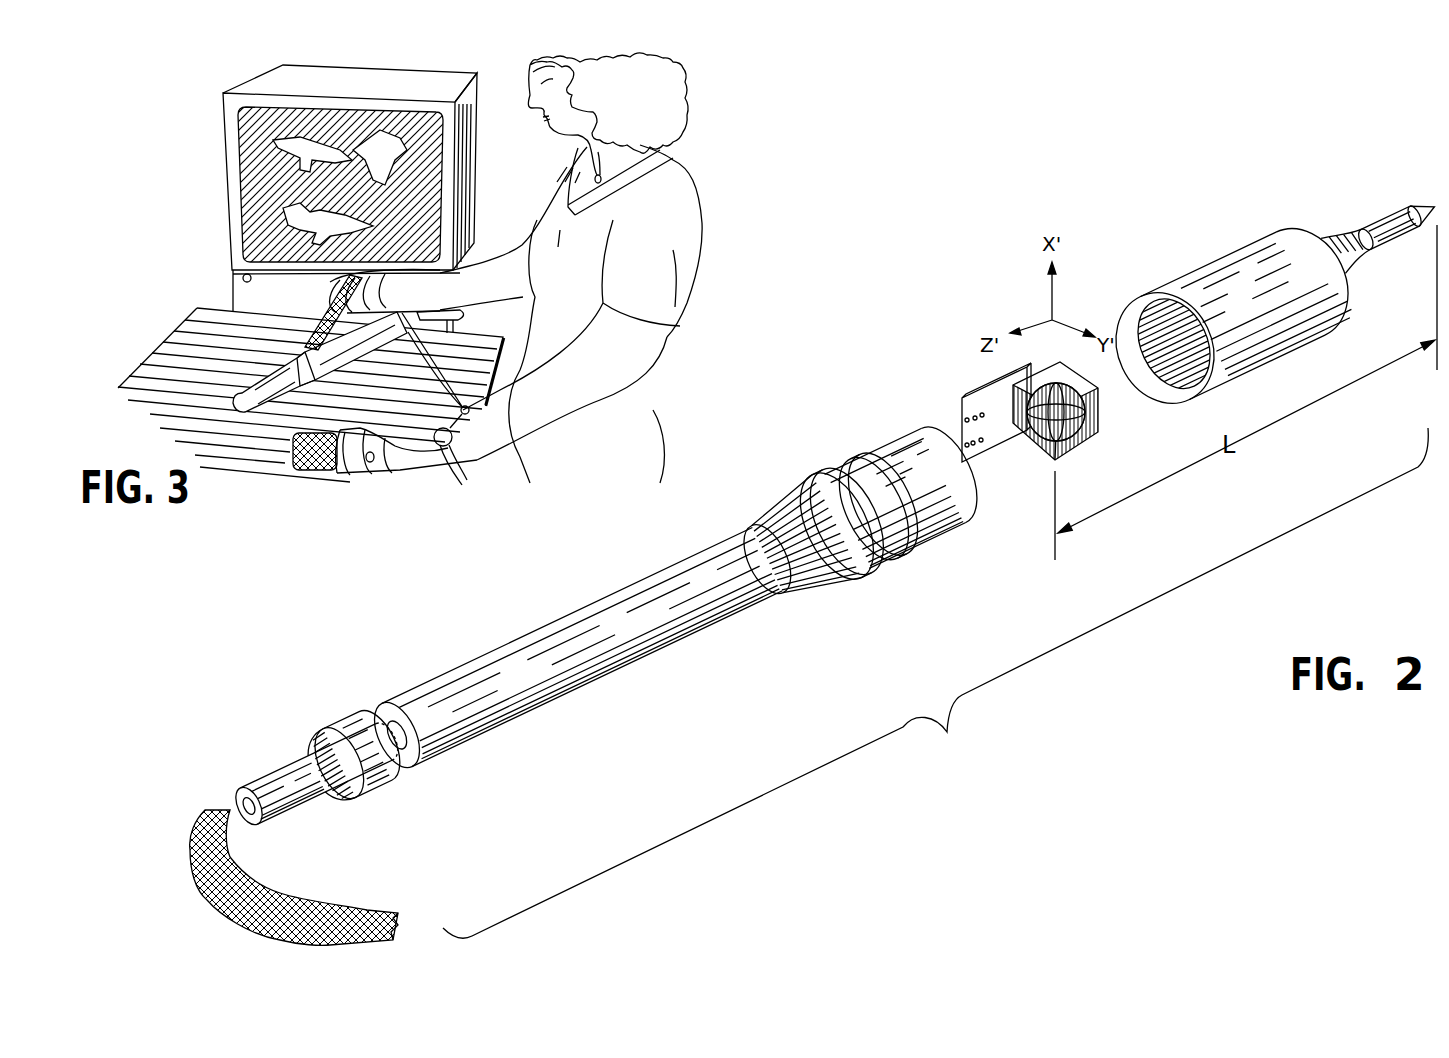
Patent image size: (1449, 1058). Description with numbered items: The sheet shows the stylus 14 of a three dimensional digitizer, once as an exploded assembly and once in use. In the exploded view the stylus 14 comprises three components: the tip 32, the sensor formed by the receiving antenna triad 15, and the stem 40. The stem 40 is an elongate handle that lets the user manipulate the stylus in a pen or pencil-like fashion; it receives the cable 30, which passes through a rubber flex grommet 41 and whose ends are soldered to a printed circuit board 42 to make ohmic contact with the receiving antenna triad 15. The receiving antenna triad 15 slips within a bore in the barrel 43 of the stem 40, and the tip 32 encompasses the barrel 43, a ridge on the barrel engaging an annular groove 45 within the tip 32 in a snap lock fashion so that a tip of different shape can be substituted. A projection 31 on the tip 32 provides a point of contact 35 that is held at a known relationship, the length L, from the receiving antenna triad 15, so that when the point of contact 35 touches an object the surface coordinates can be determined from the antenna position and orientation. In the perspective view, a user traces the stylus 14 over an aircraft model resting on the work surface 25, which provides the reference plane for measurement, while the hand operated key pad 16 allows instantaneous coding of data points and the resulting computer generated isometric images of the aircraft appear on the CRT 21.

In FIG. 3, the stylus 14 is at (320, 315).
In FIG. 2, the stylus 14 is at (935, 683).
In FIG. 2, the receiving antenna triad 15 is at (1097, 430).
In FIG. 3, the hand operated key pad 16 is at (287, 465).
In FIG. 3, the CRT 21 is at (228, 170).
In FIG. 3, the work surface 25 is at (186, 394).
In FIG. 2, the cable 30 is at (315, 920).
In FIG. 2, the projection 31 is at (1343, 237).
In FIG. 2, the tip 32 is at (1254, 303).
In FIG. 2, the point of contact 35 is at (1437, 212).
In FIG. 2, the stem 40 is at (596, 655).
In FIG. 2, the rubber flex grommet 41 is at (290, 763).
In FIG. 2, the printed circuit board 42 is at (988, 398).
In FIG. 2, the barrel 43 is at (917, 517).
In FIG. 2, the annular groove 45 is at (1147, 330).